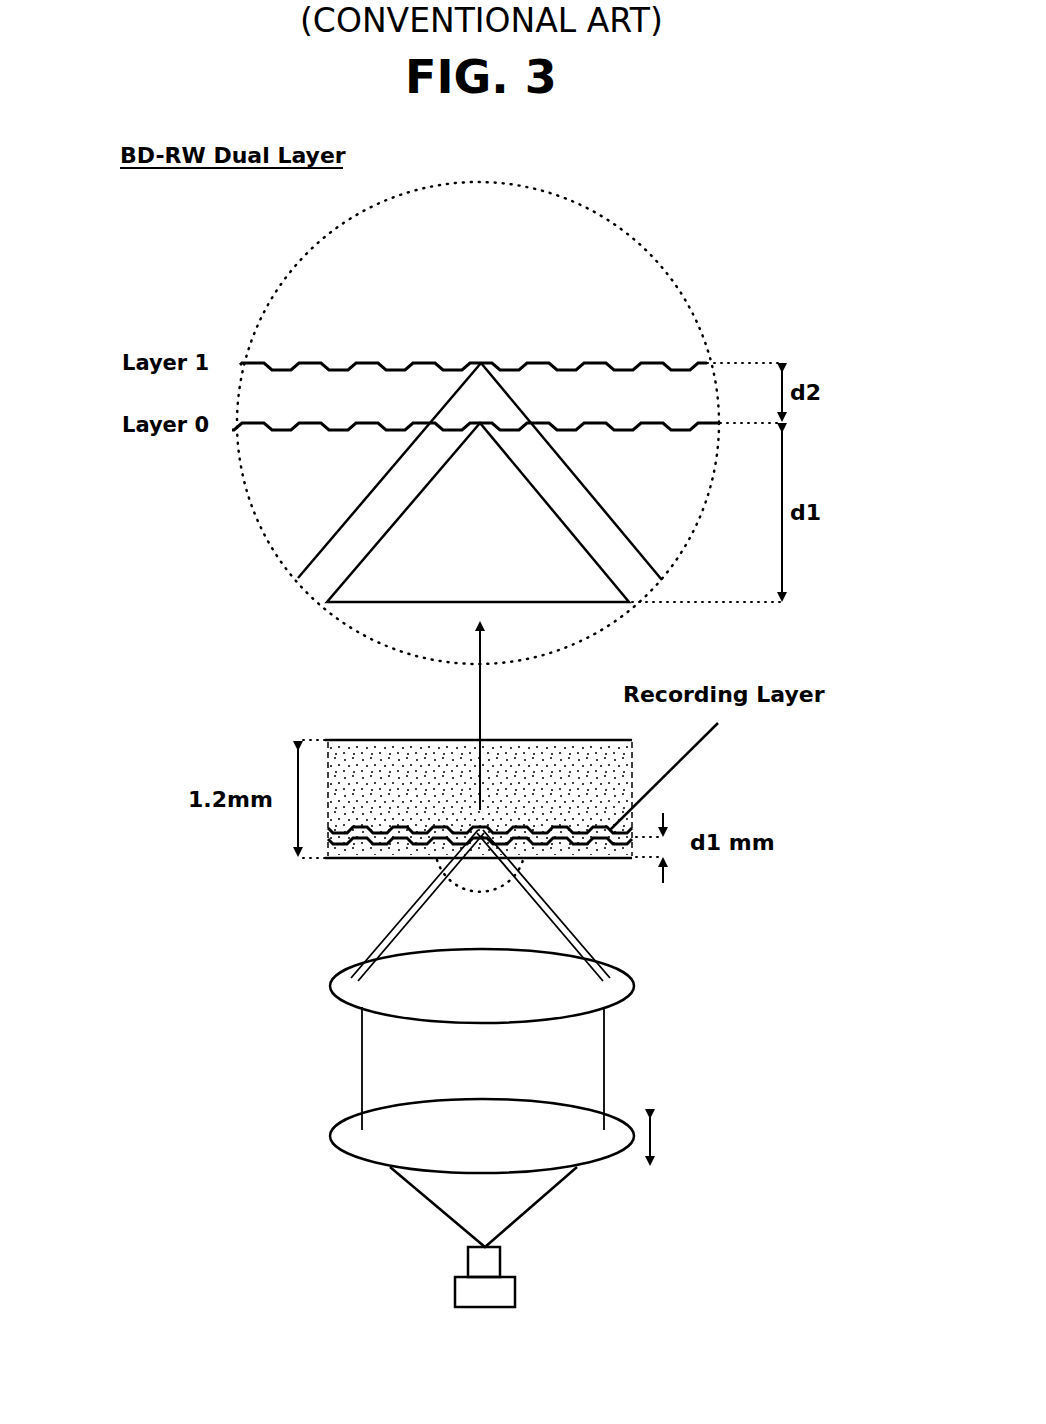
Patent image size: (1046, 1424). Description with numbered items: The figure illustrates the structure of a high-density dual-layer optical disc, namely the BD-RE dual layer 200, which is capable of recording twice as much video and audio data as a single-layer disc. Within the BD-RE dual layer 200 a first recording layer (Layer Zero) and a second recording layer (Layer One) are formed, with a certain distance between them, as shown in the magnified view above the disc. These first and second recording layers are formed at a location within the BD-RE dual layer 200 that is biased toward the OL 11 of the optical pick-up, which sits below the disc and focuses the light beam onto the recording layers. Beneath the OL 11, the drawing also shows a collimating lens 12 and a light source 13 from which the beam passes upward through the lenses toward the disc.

The BD-RE dual layer 200 is at (375, 770).
The OL 11 is at (347, 980).
The collimator lens (CL) 12 is at (347, 1129).
The laser diode (LD) 13 is at (507, 1287).